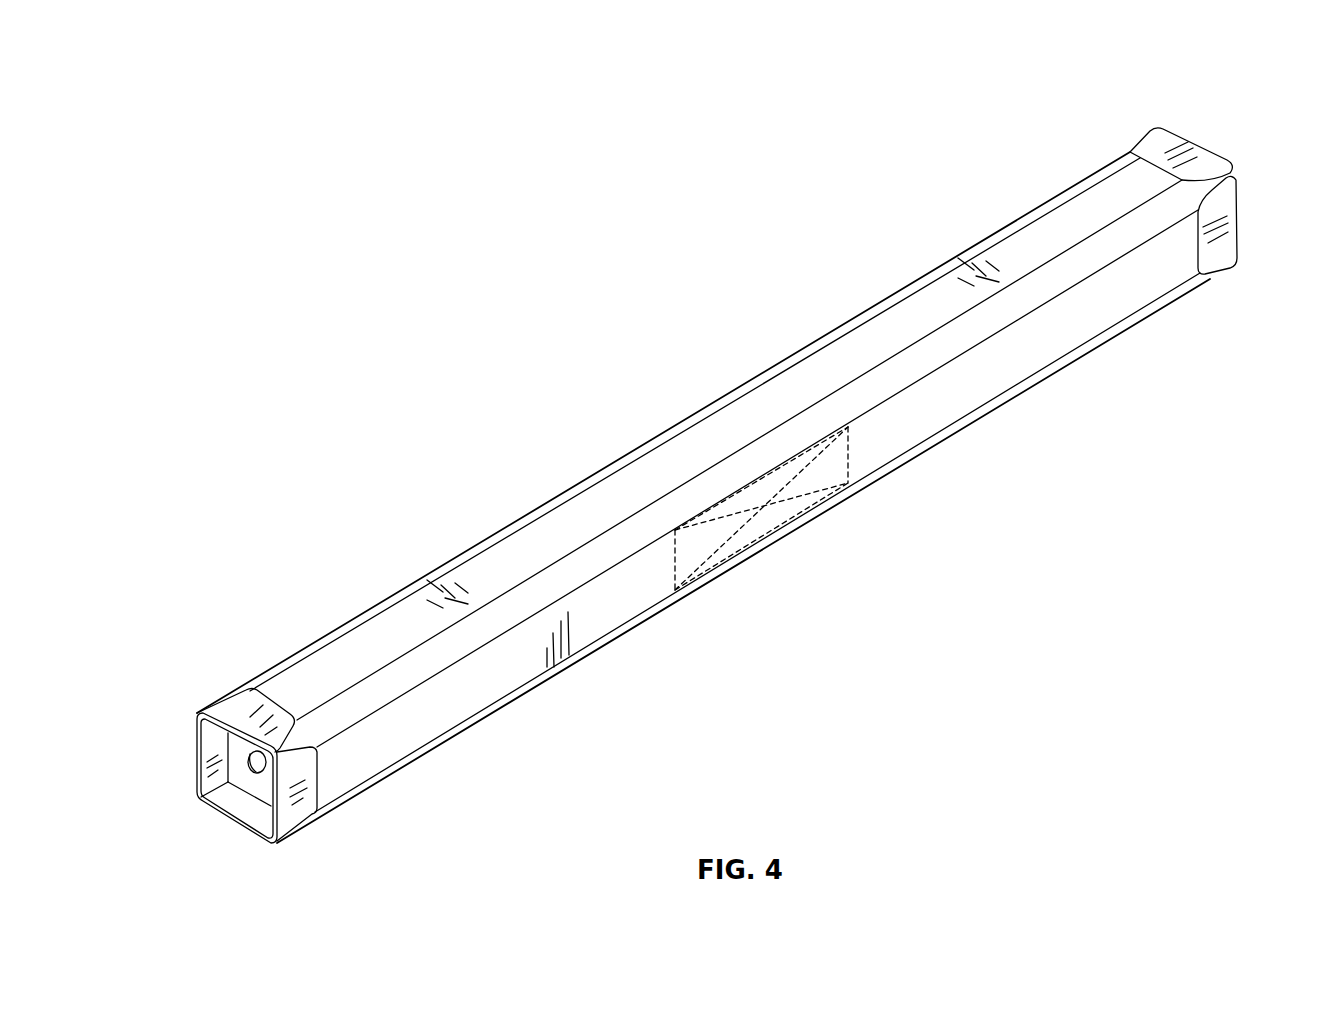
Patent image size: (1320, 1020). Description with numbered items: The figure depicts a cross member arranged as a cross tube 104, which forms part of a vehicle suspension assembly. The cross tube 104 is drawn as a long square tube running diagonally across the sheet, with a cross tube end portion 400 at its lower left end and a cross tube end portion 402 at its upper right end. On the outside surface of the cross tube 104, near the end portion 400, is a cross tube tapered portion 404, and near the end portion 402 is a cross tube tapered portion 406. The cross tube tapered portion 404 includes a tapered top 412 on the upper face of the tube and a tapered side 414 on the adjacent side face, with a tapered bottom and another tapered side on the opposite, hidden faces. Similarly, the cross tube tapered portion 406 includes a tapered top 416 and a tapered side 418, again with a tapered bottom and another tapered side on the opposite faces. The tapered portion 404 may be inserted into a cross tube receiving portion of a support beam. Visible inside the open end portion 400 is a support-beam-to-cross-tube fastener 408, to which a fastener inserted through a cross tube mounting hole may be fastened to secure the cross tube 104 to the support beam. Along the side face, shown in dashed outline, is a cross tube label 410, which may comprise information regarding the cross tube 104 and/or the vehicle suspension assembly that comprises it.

The cross tube 104 is at (663, 331).
The cross tube end portion 400 is at (232, 825).
The cross tube end portion 402 is at (1218, 173).
The cross tube tapered portion 404 is at (237, 751).
The cross tube tapered portion 406 is at (1136, 121).
The support-beam-to-cross-tube fastener 408 is at (237, 760).
The cross tube label 410 is at (767, 525).
The tapered top 412 is at (243, 712).
The tapered side 414 is at (293, 820).
The tapered top 416 is at (1163, 140).
The tapered side 418 is at (1230, 247).